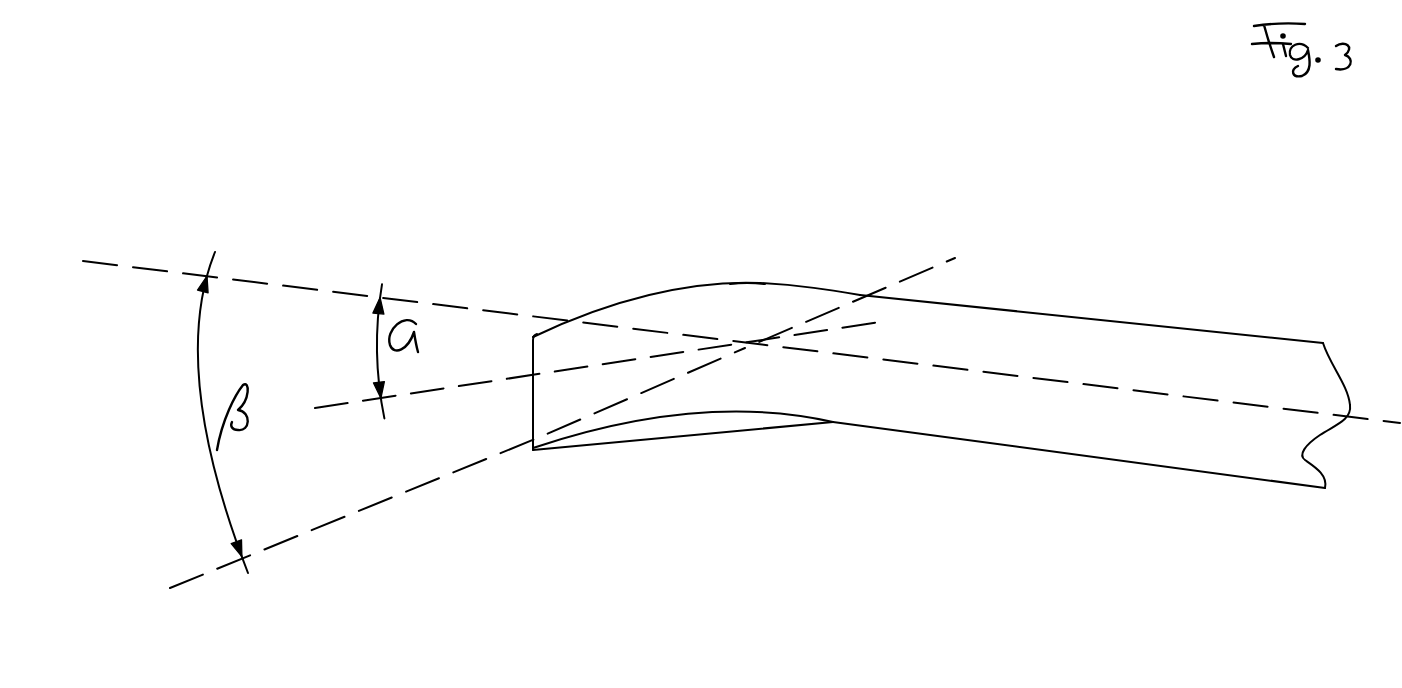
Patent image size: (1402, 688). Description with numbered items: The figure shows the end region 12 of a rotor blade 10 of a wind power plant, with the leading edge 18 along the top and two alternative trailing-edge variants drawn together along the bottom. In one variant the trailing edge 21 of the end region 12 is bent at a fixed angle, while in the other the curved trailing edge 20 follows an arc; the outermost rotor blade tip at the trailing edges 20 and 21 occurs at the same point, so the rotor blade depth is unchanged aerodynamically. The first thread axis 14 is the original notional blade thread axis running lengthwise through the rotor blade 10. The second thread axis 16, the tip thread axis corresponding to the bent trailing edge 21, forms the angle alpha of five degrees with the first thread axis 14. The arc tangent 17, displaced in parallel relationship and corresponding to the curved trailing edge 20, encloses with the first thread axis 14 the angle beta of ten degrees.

The rotor blade 10 is at (1155, 295).
The end region 12 is at (680, 320).
The first thread axis 14 is at (1003, 375).
The second thread axis 16 is at (887, 280).
The arc tangent 17 is at (367, 507).
The leading edge 18 is at (747, 283).
The curved trailing edge 20 is at (672, 415).
The trailing edge 21 is at (740, 433).